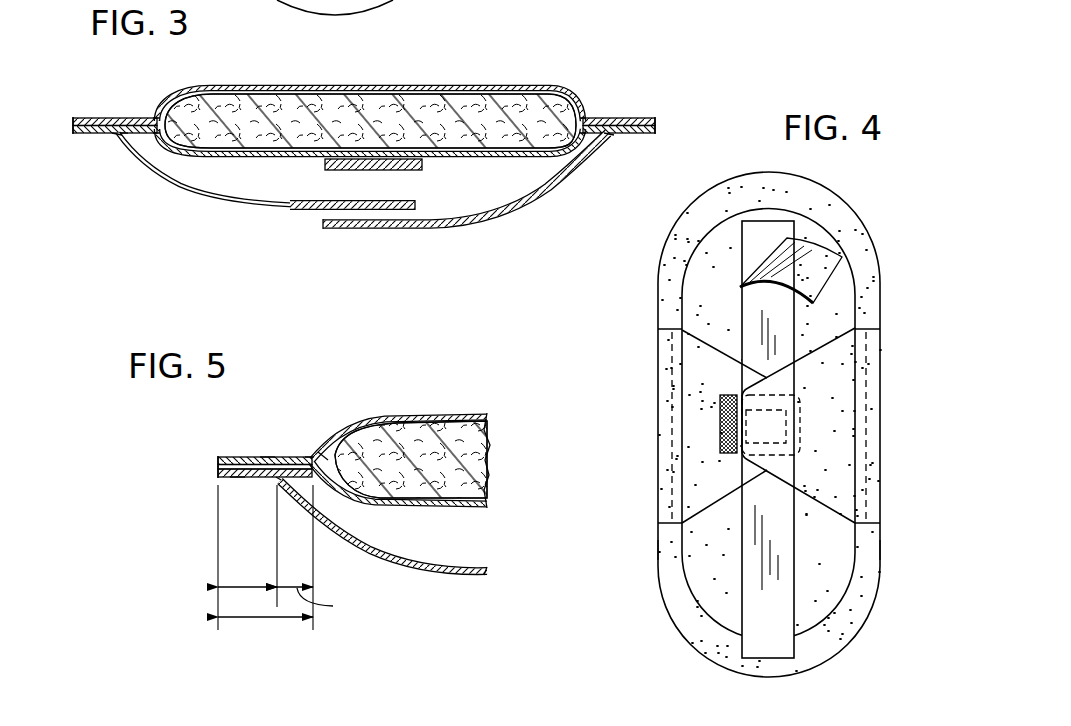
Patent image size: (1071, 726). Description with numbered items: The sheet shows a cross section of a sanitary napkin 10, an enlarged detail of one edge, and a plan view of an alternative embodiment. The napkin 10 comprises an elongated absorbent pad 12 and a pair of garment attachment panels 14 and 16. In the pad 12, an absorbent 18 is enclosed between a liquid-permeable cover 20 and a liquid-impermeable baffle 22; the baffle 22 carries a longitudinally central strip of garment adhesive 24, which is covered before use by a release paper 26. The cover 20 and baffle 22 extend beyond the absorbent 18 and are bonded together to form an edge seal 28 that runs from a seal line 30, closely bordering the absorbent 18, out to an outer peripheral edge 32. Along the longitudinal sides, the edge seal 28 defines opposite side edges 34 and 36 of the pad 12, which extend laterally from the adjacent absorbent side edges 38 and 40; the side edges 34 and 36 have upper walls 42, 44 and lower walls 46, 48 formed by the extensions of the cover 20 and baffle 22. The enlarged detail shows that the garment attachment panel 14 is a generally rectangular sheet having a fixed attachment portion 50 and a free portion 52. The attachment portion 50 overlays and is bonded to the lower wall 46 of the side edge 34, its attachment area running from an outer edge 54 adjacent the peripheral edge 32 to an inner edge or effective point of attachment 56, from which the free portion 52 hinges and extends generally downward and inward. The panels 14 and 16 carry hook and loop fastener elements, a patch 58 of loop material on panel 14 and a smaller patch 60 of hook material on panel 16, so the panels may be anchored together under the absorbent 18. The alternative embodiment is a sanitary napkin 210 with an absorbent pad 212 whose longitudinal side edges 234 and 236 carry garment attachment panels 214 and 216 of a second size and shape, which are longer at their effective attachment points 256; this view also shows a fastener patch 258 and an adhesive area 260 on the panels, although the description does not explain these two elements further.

In FIG. 3, the sanitary napkin 10 is at (227, 80).
In FIG. 5, the sanitary napkin 10 is at (373, 410).
In FIG. 3, the absorbent pad 12 is at (278, 80).
In FIG. 5, the absorbent pad 12 is at (427, 407).
In FIG. 3, the first garment attachment panel 14 is at (232, 212).
In FIG. 5, the first garment attachment panel 14 is at (413, 593).
In FIG. 3, the second garment attachment panel 16 is at (493, 236).
In FIG. 3, the absorbent 18 is at (520, 92).
In FIG. 5, the absorbent 18 is at (477, 465).
In FIG. 3, the liquid-permeable cover 20 is at (463, 86).
In FIG. 5, the liquid-permeable cover 20 is at (473, 415).
In FIG. 3, the liquid-impermeable baffle 22 is at (440, 158).
In FIG. 5, the liquid-impermeable baffle 22 is at (430, 510).
In FIG. 3, the garment adhesive 24 is at (358, 160).
In FIG. 3, the release paper 26 is at (330, 171).
In FIG. 3, the edge seal 28 is at (125, 118).
In FIG. 5, the edge seal 28 is at (270, 457).
In FIG. 3, the seal line 30 is at (587, 116).
In FIG. 5, the seal line 30 is at (310, 457).
In FIG. 5, the outer peripheral edge 32 is at (220, 462).
In FIG. 3, the first side edge 34 is at (120, 170).
In FIG. 5, the first side edge 34 is at (265, 440).
In FIG. 3, the second side edge 36 is at (623, 156).
In FIG. 3, the first absorbent side edge 38 is at (153, 118).
In FIG. 5, the first absorbent side edge 38 is at (323, 450).
In FIG. 3, the second absorbent side edge 40 is at (583, 117).
In FIG. 3, the upper wall 42 is at (108, 118).
In FIG. 5, the upper wall 42 is at (220, 458).
In FIG. 3, the upper wall 44 is at (623, 117).
In FIG. 3, the lower wall 46 is at (75, 127).
In FIG. 5, the lower wall 46 is at (217, 468).
In FIG. 3, the lower wall 48 is at (657, 124).
In FIG. 3, the attachment portion 50 is at (105, 134).
In FIG. 5, the attachment portion 50 is at (237, 478).
In FIG. 3, the free portion 52 is at (183, 188).
In FIG. 5, the free portion 52 is at (443, 577).
In FIG. 5, the outer edge 54 is at (220, 474).
In FIG. 3, the effective point of attachment 56 is at (118, 134).
In FIG. 5, the effective point of attachment 56 is at (280, 483).
In FIG. 3, the patch of loop material 58 is at (310, 211).
In FIG. 3, the patch of hook material 60 is at (363, 229).
In FIG. 4, the sanitary napkin 210 is at (892, 217).
In FIG. 4, the absorbent pad 212 is at (892, 282).
In FIG. 4, the garment attachment panel 214 is at (707, 520).
In FIG. 4, the garment attachment panel 216 is at (843, 520).
In FIG. 4, the longitudinal side edge 234 is at (652, 535).
In FIG. 4, the longitudinal side edge 236 is at (888, 570).
In FIG. 4, the effective attachment points 256 is at (667, 412).
In FIG. 4, the fastening tape 258 is at (720, 420).
In FIG. 4, the adhesive area 260 is at (800, 420).